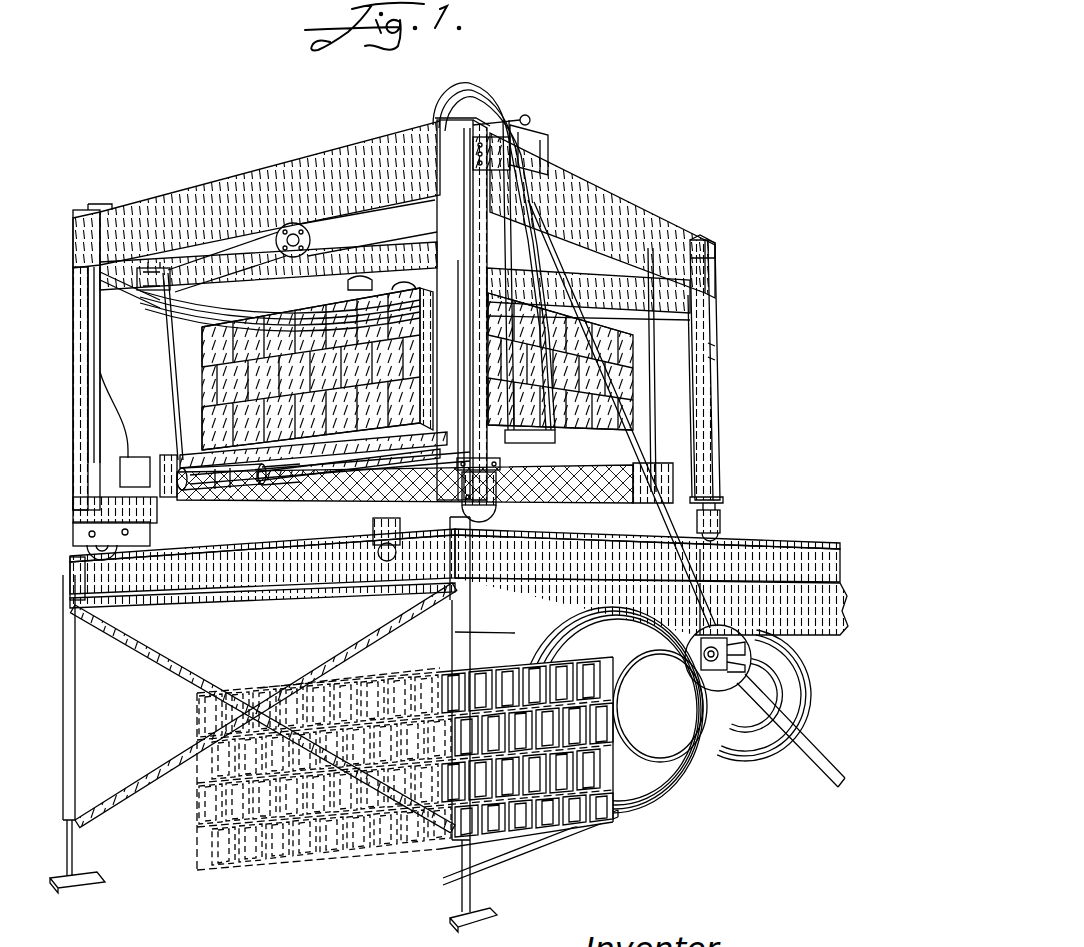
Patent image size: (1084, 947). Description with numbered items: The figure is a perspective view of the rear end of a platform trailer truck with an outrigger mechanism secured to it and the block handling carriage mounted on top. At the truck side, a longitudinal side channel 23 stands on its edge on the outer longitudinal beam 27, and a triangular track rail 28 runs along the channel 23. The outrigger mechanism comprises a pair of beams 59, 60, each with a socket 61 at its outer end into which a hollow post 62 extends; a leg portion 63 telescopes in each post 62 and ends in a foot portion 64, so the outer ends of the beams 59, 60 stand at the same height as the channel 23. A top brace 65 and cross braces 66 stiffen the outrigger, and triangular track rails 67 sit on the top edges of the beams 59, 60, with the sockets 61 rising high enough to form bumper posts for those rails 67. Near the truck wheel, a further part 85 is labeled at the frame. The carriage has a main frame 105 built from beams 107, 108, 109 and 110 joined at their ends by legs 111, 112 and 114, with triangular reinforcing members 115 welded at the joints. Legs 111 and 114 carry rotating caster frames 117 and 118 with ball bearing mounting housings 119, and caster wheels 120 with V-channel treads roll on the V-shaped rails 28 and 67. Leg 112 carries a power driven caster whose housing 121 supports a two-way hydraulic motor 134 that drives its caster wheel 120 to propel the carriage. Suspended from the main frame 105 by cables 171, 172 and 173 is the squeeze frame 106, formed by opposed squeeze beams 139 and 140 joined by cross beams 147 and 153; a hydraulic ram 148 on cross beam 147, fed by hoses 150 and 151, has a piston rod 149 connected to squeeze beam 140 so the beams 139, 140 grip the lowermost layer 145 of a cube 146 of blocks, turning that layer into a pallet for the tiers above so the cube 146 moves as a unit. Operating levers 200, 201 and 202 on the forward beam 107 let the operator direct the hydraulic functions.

The longitudinal side channel 23 is at (748, 565).
The outer longitudinal beam 27 is at (749, 609).
The track rail 28 is at (750, 546).
The outrigger beam 59 is at (647, 566).
The outrigger beam 60 is at (340, 551).
The socket 61 is at (449, 546).
The hollow post 62 is at (80, 708).
The leg portion 63 is at (76, 848).
The foot portion 64 is at (88, 874).
The top brace 65 is at (268, 603).
The cross brace 66 is at (328, 649).
The track rail 67 is at (270, 566).
The wheel hub assembly 85 is at (721, 583).
The main frame 105 is at (681, 216).
The squeeze frame 106 is at (415, 502).
The beam 107 is at (612, 200).
The beam 108 is at (228, 208).
The beam 109 is at (163, 288).
The beam 110 is at (395, 281).
The leg 111 is at (470, 314).
The leg 112 is at (103, 386).
The leg 114 is at (717, 413).
The reinforcing member 115 is at (76, 228).
The caster frame 117 is at (494, 510).
The caster frame 118 is at (704, 537).
The ball bearing caster mounting housing 119 is at (501, 467).
The caster wheel 120 is at (720, 548).
The power driven caster housing 121 is at (130, 539).
The two-way hydraulic motor 134 is at (150, 515).
The squeeze beam 139 is at (551, 302).
The squeeze beam 140 is at (168, 458).
The lowermost layer of blocks 145 is at (342, 500).
The cube of blocks 146 is at (203, 808).
The cross beam 147 is at (360, 448).
The hydraulic ram 148 is at (192, 489).
The piston rod 149 is at (218, 506).
The hose connection 150 is at (299, 478).
The hose connection 151 is at (304, 458).
The cross beam 153 is at (531, 545).
The cable 171 is at (652, 377).
The cable 172 is at (432, 357).
The cable 173 is at (170, 399).
The operating lever 200 is at (545, 146).
The operating lever 201 is at (528, 124).
The operating lever 202 is at (518, 112).